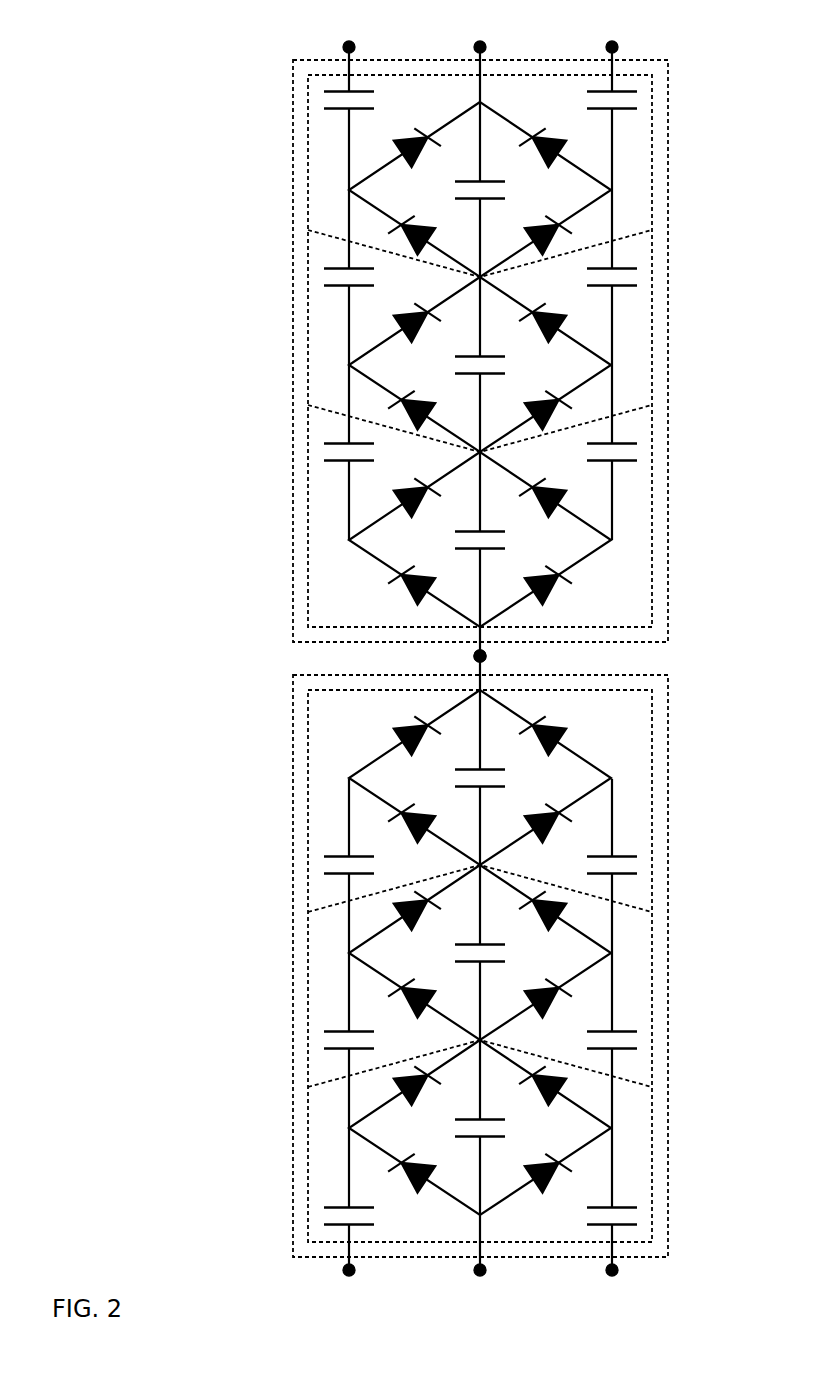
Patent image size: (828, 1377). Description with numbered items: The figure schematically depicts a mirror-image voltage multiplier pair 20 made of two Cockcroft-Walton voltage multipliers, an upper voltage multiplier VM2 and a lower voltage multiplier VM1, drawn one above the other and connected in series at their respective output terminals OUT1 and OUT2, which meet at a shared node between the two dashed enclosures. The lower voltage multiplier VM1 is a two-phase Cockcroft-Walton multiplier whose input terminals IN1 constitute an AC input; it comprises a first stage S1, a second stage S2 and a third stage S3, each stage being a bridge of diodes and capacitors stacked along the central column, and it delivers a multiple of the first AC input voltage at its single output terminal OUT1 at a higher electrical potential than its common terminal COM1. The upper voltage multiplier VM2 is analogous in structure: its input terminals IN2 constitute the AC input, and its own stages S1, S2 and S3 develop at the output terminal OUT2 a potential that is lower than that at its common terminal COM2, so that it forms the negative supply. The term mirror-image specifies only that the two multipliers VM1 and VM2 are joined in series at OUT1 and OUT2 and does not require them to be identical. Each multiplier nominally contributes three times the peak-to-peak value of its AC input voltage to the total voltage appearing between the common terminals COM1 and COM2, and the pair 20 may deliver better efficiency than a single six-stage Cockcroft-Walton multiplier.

The mirror-image voltage multiplier pair 20 is at (177, 55).
The voltage multiplier VM1 is at (293, 952).
The voltage multiplier VM2 is at (293, 255).
The first stage S1 is at (652, 153).
The second stage S2 is at (652, 318).
The third stage S3 is at (652, 548).
The input terminals IN1 is at (481, 1283).
The input terminals IN2 is at (481, 36).
The common terminal COM1 is at (480, 1283).
The common terminal COM2 is at (480, 36).
The output terminal OUT1 is at (454, 658).
The output terminal OUT2 is at (507, 658).